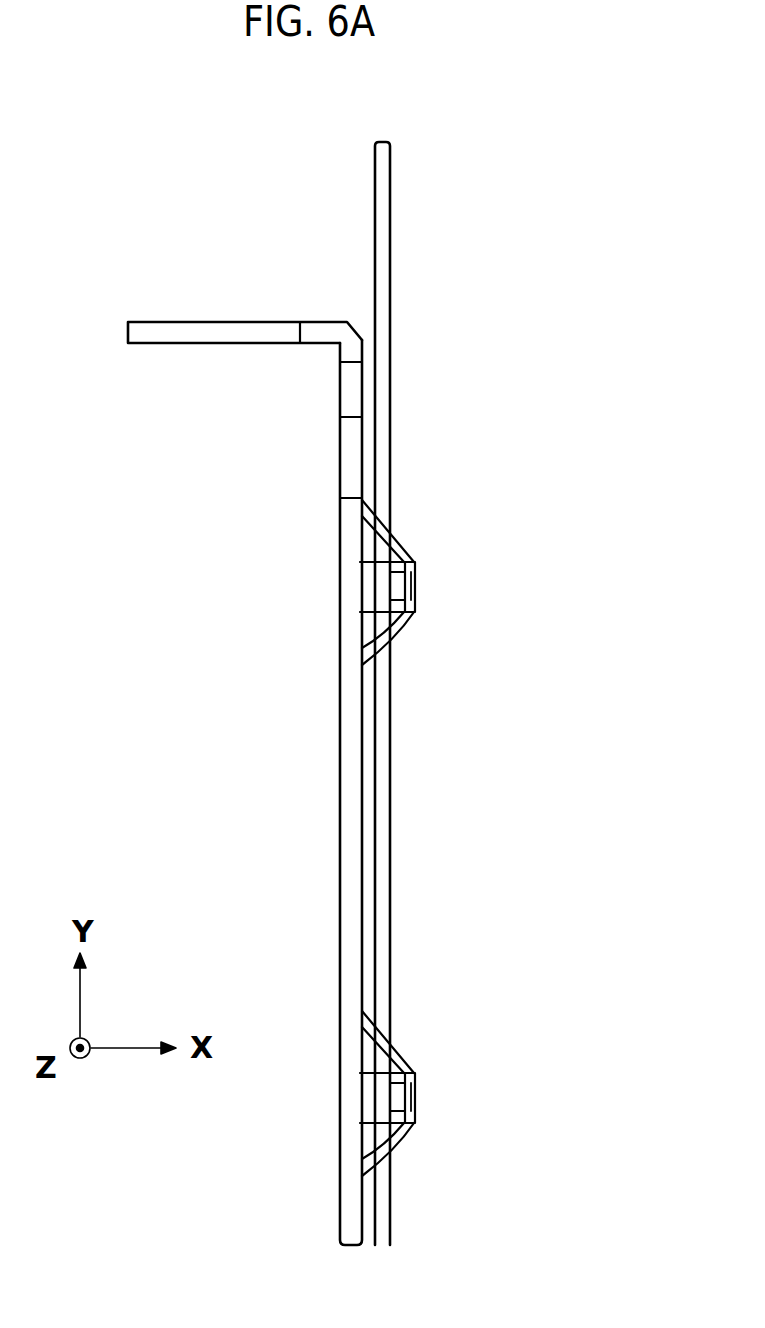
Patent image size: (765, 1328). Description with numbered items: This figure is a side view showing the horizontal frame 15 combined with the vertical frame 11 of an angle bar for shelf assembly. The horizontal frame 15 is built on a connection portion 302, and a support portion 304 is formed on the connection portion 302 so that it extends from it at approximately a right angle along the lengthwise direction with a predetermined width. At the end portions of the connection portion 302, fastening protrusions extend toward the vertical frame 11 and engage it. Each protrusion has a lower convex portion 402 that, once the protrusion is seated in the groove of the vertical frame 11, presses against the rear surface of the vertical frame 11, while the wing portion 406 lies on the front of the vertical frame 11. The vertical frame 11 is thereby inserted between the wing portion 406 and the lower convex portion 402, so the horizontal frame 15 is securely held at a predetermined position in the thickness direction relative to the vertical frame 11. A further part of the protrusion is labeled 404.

The vertical frame 11 is at (391, 255).
The horizontal frame 15 is at (320, 757).
The connection portion 302 is at (340, 455).
The support portion 304 is at (218, 345).
The lower convex portion 402 is at (362, 527).
The clip body 404 is at (402, 542).
The wing portion 406 is at (422, 593).